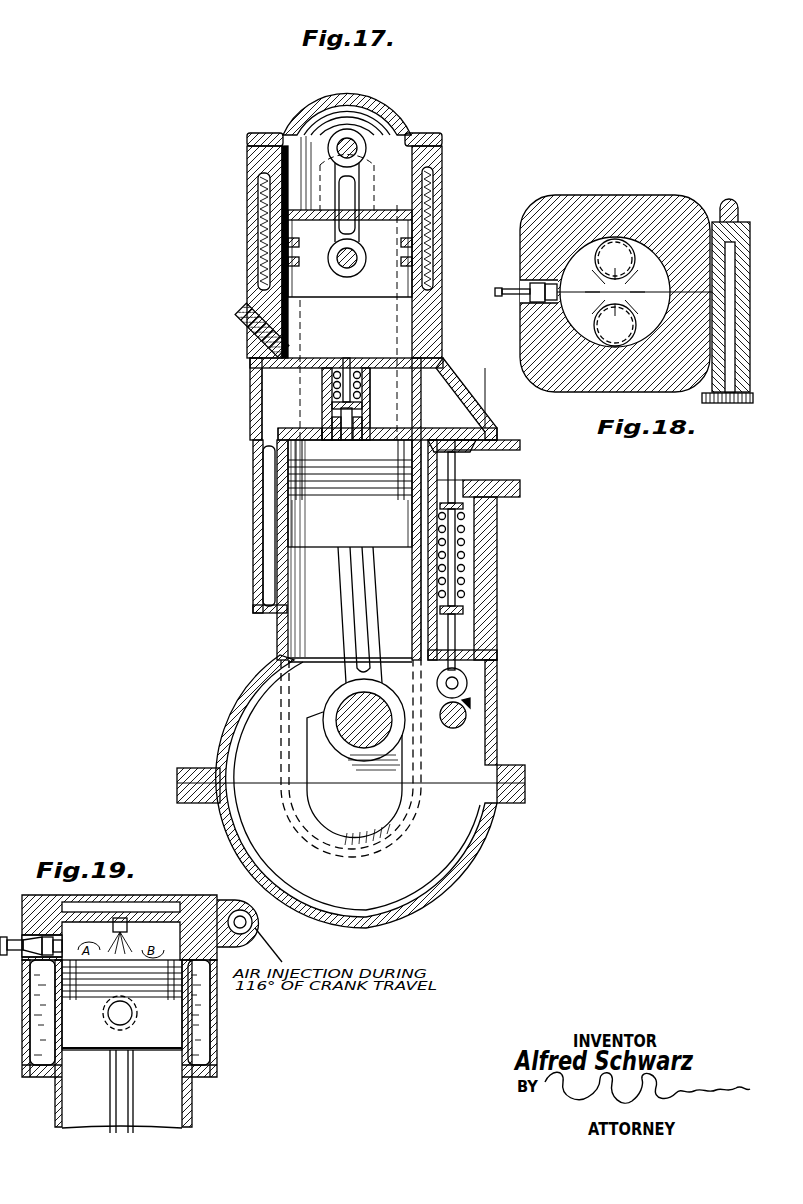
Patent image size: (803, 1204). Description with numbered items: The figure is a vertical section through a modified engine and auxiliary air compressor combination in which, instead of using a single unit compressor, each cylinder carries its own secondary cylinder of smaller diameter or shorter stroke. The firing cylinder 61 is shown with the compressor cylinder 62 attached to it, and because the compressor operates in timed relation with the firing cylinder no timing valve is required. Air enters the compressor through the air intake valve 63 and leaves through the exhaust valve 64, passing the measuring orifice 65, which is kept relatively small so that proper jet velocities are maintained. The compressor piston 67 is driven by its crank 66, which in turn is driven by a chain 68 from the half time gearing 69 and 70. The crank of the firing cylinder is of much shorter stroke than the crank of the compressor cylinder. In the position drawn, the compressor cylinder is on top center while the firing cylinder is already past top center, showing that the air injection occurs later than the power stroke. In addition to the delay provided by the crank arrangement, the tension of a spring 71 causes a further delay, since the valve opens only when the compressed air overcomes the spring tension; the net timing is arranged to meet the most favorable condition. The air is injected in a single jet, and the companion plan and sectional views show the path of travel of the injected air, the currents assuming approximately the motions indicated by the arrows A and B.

The firing cylinder 61 is at (307, 627).
The compressor cylinder 62 is at (407, 337).
The air intake valve 63 is at (247, 334).
The exhaust valve 64 is at (347, 361).
The measuring orifice 65 is at (373, 420).
The crank 66 is at (360, 196).
The compressor piston 67 is at (393, 270).
The chain 68 is at (442, 217).
The half time gearing 69 is at (413, 827).
The half time gearing 70 is at (382, 150).
The spring 71 is at (363, 387).